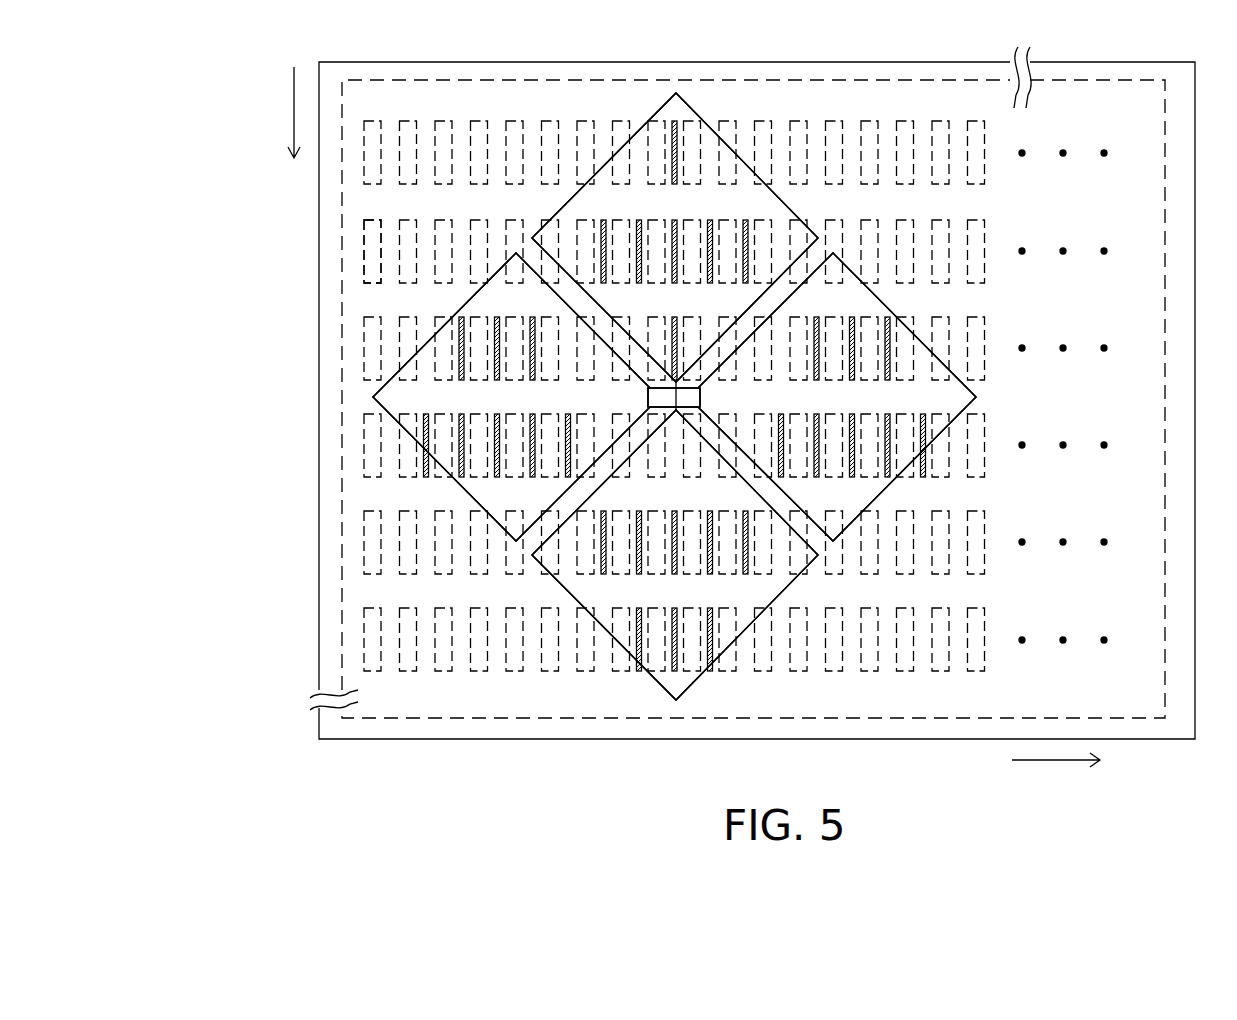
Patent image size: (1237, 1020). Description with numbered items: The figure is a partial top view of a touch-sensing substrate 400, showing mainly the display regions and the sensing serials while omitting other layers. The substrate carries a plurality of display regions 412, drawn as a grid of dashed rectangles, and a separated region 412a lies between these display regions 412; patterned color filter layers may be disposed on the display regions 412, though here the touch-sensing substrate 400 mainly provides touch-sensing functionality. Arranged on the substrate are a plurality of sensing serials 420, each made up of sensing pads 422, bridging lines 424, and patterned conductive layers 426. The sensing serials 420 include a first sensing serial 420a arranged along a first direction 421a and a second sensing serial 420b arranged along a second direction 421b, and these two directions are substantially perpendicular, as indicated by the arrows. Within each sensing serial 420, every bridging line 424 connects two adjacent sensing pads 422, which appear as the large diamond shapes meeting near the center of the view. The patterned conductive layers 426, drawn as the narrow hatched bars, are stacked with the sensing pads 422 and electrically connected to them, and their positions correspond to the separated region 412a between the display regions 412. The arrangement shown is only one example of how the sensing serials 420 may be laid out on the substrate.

The touch-sensing substrate 400 is at (1236, 800).
The display regions 412 is at (373, 115).
The separated region 412a is at (382, 195).
The sensing serials 420 is at (192, 702).
The first sensing serial 420a is at (222, 250).
The second sensing serial 420b is at (730, 785).
The first direction 421a is at (292, 118).
The second direction 421b is at (1055, 760).
The sensing pads 422 is at (576, 195).
The bridging lines 424 is at (660, 387).
The patterned conductive layers 426 is at (603, 262).